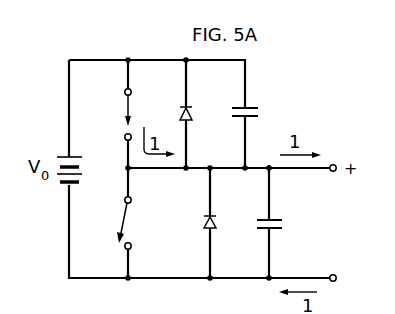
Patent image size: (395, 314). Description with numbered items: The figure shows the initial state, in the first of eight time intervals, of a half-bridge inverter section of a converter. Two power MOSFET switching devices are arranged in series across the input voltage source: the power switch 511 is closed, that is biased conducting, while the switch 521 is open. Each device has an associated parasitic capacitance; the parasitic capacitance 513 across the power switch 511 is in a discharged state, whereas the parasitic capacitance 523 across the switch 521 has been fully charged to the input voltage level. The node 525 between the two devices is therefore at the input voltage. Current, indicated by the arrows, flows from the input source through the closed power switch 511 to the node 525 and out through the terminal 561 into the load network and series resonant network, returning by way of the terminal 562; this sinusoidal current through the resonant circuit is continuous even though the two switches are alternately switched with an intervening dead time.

The power switch 511 is at (141, 114).
The parasitic capacitance 513 is at (262, 114).
The switch 521 is at (137, 223).
The parasitic capacitance 523 is at (287, 224).
The node 525 is at (266, 172).
The terminal 561 is at (333, 172).
The terminal 562 is at (335, 265).